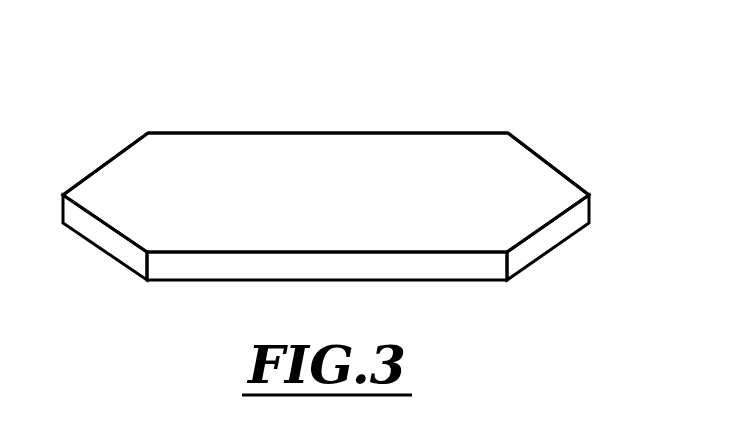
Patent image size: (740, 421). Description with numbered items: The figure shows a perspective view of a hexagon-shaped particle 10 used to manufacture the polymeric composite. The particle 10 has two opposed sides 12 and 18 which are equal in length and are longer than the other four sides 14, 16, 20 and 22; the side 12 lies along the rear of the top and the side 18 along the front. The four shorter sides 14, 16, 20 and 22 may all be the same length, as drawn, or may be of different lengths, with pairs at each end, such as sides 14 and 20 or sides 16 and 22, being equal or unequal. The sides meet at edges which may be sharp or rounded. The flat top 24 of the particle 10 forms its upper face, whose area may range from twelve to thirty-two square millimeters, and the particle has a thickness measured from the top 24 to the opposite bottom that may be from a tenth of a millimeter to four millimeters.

The particle 10 is at (339, 192).
The side 12 is at (327, 132).
The side 14 is at (560, 170).
The side 16 is at (552, 238).
The side 18 is at (393, 270).
The side 20 is at (110, 240).
The side 22 is at (103, 165).
The top face 24 is at (326, 201).